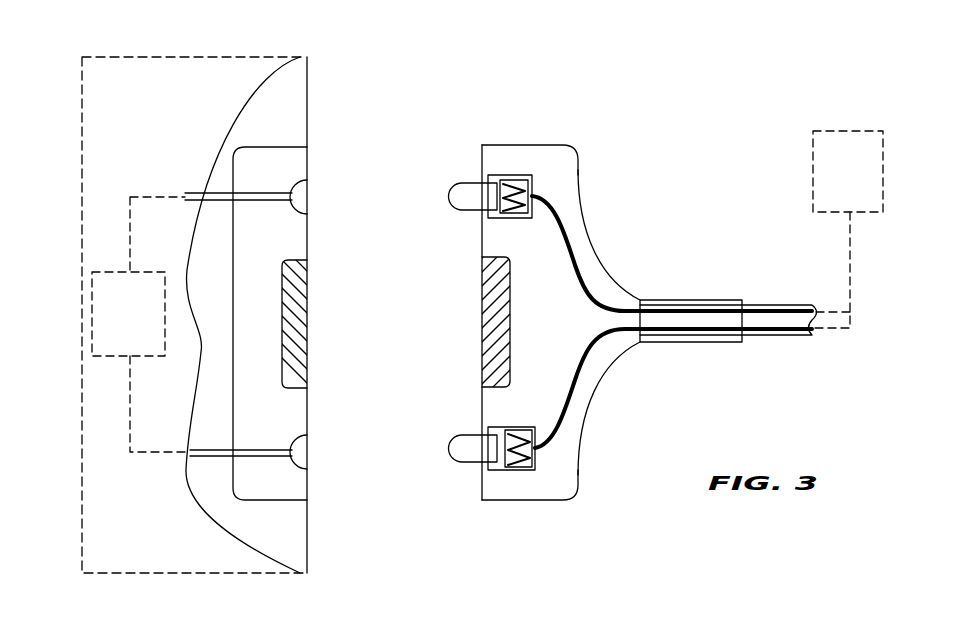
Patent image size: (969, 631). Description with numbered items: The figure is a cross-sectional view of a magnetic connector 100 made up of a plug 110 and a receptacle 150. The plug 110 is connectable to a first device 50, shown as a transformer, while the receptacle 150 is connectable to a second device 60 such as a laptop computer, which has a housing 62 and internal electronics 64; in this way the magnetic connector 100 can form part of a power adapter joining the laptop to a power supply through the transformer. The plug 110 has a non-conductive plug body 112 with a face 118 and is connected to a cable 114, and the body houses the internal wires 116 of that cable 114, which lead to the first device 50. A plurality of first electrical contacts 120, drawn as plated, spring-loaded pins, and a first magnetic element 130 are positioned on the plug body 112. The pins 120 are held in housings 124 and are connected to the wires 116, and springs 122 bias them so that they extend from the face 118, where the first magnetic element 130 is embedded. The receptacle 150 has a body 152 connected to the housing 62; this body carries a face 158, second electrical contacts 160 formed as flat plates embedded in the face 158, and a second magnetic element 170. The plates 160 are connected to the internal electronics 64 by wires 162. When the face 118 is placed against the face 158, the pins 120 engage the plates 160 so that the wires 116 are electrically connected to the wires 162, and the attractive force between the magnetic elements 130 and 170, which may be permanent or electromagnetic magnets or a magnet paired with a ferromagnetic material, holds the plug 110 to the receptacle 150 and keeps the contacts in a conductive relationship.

The first device 50 is at (847, 229).
The second device 60 is at (247, 57).
The housing 62 is at (307, 80).
The internal electronics 64 is at (128, 314).
The magnetic connector 100 is at (643, 272).
The plug 110 is at (622, 313).
The plug body 112 is at (607, 257).
The cable 114 is at (762, 302).
The internal wires 116 is at (788, 330).
The face 118 is at (482, 150).
The first electrical contacts 120 is at (453, 208).
The springs 122 is at (518, 180).
The housings 124 is at (534, 176).
The first magnetic element 130 is at (482, 292).
The receptacle 150 is at (272, 301).
The body 152 is at (233, 160).
The face 158 is at (307, 162).
The second electrical contacts 160 is at (307, 203).
The wires 162 is at (198, 190).
The second magnetic element 170 is at (307, 293).